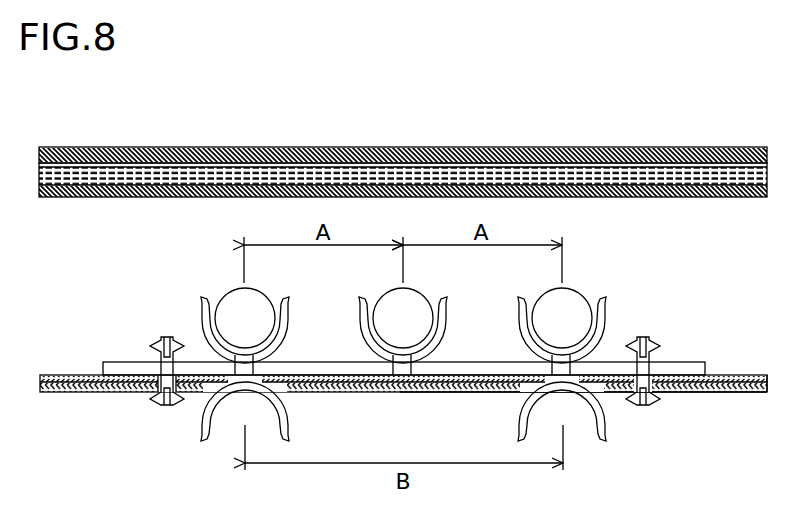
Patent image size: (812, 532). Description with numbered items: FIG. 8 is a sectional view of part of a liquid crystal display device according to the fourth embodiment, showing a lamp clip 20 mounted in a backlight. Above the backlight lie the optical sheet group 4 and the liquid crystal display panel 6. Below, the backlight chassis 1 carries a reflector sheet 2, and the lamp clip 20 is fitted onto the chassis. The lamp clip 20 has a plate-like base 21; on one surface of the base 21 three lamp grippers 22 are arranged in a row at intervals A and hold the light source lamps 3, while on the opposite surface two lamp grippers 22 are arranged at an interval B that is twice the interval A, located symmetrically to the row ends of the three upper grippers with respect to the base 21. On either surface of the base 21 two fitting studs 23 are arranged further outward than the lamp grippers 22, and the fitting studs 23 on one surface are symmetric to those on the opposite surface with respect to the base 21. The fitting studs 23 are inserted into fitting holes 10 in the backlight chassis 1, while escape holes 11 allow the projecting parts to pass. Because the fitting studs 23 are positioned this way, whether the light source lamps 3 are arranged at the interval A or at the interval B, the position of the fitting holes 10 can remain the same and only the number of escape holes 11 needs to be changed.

The backlight chassis 1 is at (70, 393).
The reflector sheet 2 is at (65, 376).
The light source lamp 3 is at (582, 296).
The optical sheet group 4 is at (690, 197).
The liquid crystal display panel 6 is at (690, 147).
The fitting hole 10 is at (670, 393).
The escape hole 11 is at (193, 397).
The lamp clip 20 is at (178, 310).
The base 21 is at (321, 362).
The lamp gripper 22 is at (606, 318).
The fitting stud 23 is at (633, 405).